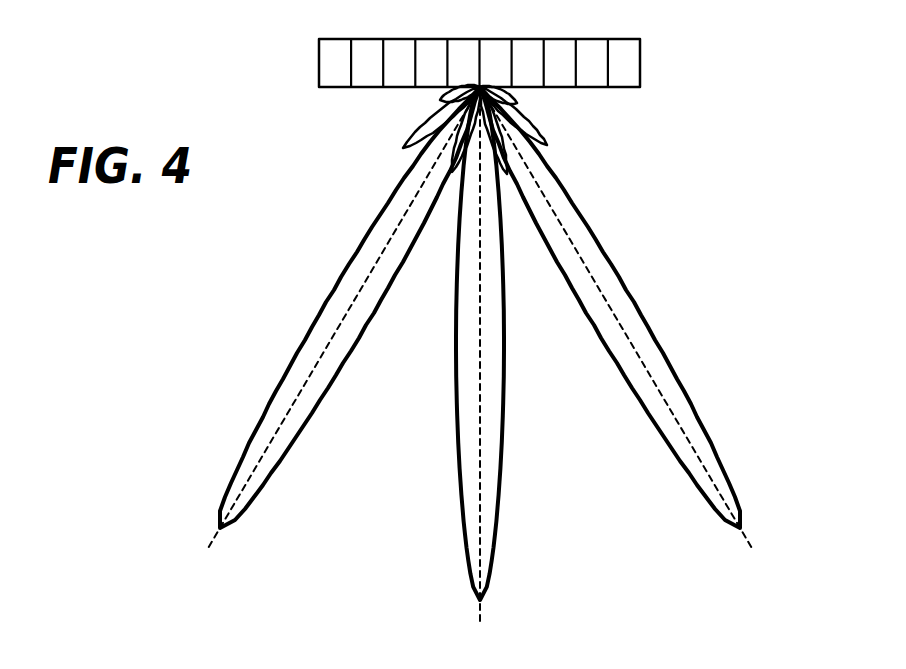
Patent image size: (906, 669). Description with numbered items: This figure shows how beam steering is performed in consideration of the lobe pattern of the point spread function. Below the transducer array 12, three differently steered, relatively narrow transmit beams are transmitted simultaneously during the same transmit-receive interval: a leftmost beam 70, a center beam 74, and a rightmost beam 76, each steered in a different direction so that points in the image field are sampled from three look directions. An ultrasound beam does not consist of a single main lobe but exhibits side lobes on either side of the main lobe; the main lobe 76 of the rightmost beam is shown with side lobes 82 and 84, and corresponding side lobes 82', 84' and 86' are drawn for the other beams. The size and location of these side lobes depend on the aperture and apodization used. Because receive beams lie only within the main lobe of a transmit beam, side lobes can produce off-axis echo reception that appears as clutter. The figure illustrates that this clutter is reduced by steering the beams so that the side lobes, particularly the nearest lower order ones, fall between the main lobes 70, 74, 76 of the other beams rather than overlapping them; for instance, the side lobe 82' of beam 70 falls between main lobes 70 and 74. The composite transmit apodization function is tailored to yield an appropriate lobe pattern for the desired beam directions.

The antenna array 12 is at (338, 88).
The transmit beam 70 is at (357, 253).
The transmit beam 74 is at (457, 358).
The transmit beam 76 is at (603, 252).
The side lobe 82 is at (578, 137).
The side lobe 82' is at (444, 193).
The side lobe 84 is at (557, 113).
The side lobe 84' is at (408, 116).
The side lobe 86' is at (439, 198).